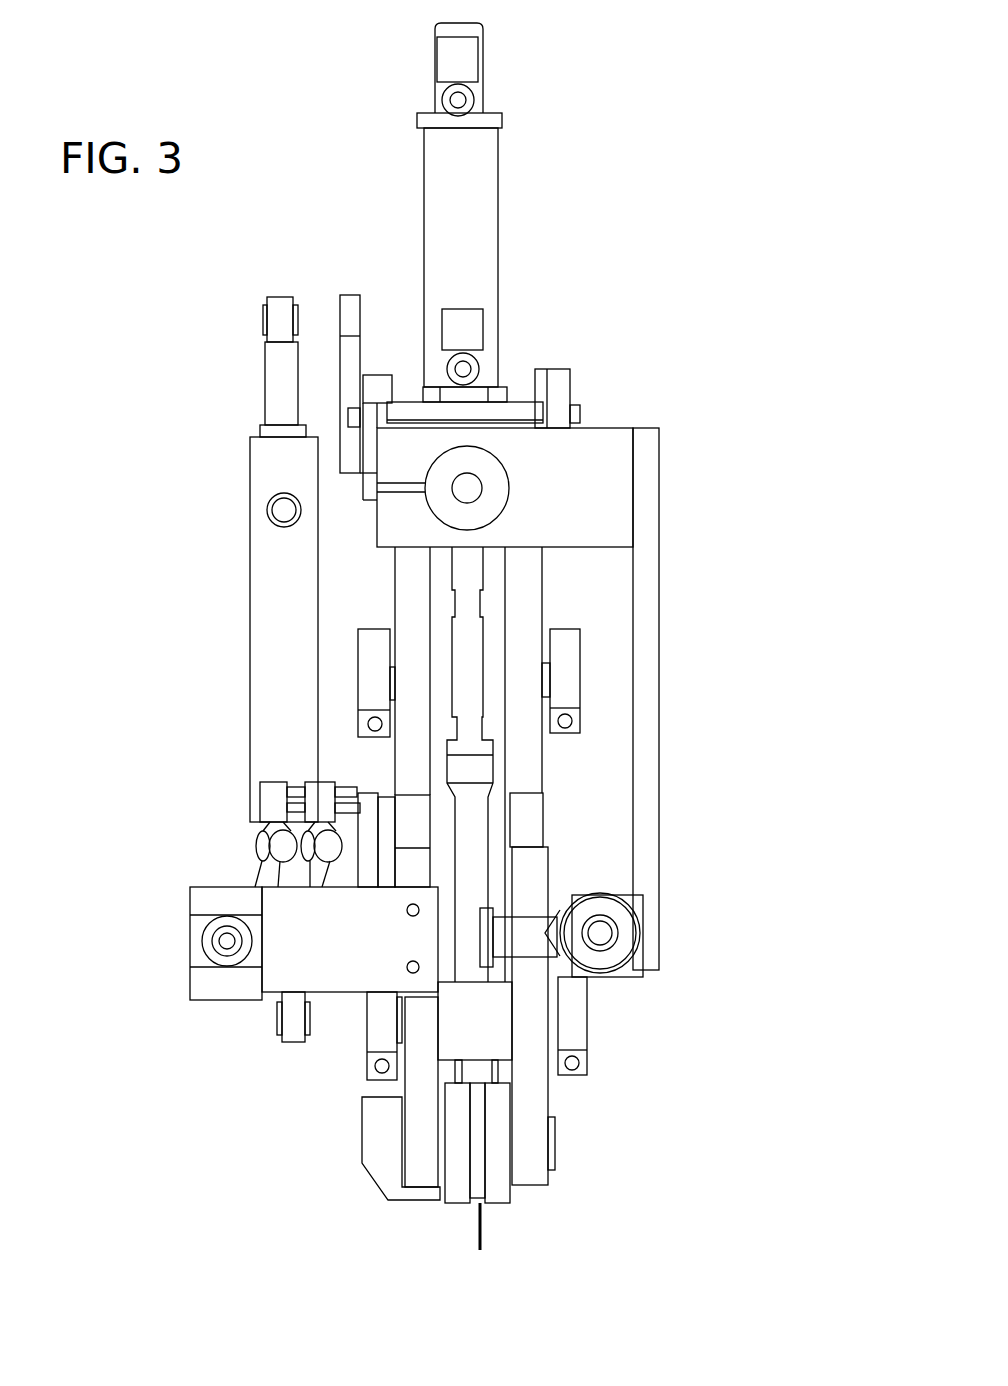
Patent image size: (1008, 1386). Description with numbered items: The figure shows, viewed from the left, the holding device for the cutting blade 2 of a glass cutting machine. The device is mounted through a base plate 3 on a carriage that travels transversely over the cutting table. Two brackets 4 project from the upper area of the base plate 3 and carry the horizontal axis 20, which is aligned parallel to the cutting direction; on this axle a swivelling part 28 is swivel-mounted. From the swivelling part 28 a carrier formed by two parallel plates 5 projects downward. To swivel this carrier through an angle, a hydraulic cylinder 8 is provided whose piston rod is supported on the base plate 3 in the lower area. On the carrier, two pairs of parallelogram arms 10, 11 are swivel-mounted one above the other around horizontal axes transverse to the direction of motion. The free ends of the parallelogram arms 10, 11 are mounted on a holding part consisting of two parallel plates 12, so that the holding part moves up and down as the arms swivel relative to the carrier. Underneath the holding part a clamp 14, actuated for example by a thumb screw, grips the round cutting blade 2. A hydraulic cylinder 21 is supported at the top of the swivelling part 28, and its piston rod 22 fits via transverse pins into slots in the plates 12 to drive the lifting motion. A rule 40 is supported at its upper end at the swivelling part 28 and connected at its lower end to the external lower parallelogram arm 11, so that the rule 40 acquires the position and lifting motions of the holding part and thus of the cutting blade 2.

The cutting blade 2 is at (477, 1213).
The base plate 3 is at (647, 522).
The brackets 4 is at (603, 448).
The plates 5 is at (410, 588).
The hydraulic cylinder 8 is at (308, 962).
The parallelogram arms 10 is at (378, 698).
The parallelogram arms 11 is at (387, 1017).
The plates 12 is at (422, 1068).
The clamp 14 is at (378, 1130).
The horizontal axis 20 is at (593, 467).
The hydraulic cylinder 21 is at (455, 248).
The piston rod 22 is at (472, 662).
The swivelling part 28 is at (508, 329).
The rule 40 is at (277, 633).